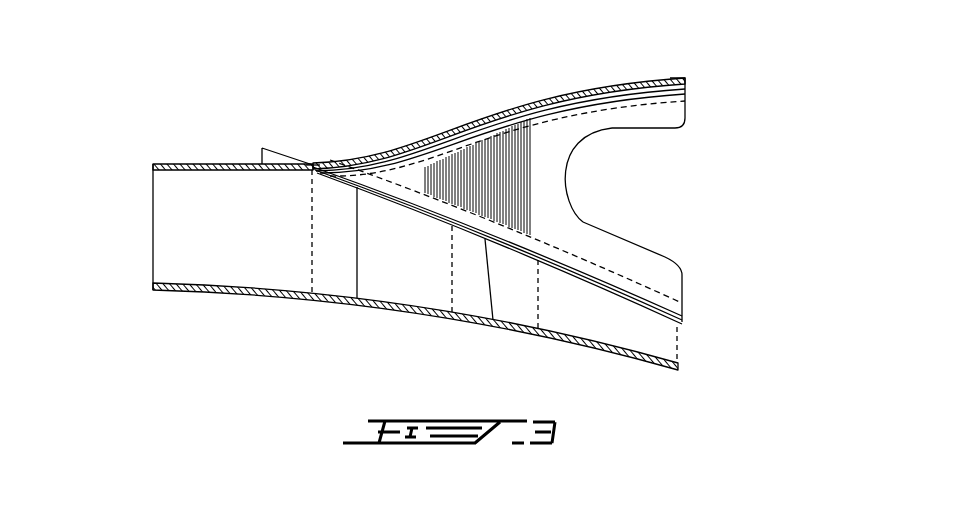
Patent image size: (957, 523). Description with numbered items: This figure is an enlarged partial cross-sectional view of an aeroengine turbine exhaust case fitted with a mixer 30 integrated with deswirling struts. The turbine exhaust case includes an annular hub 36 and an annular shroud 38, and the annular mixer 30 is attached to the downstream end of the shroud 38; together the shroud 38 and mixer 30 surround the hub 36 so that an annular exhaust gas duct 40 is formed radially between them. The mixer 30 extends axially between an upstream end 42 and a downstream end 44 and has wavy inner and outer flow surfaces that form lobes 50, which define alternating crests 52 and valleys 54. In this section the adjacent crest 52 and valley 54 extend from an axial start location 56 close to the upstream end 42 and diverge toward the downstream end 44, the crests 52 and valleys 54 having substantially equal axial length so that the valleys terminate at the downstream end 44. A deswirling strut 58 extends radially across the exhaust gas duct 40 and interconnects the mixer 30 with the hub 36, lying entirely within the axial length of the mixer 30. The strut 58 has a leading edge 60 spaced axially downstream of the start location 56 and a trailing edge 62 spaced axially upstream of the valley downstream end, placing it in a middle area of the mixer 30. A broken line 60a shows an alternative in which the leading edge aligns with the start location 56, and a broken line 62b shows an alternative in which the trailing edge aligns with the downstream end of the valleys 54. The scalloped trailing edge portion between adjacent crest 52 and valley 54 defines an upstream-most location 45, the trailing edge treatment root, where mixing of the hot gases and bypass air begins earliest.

The mixer 30 is at (545, 123).
The hub 36 is at (250, 291).
The shroud 38 is at (198, 163).
The exhaust gas duct 40 is at (520, 300).
The upstream end 42 is at (262, 148).
The downstream end 44 is at (683, 290).
The upstream-most location 45 is at (565, 180).
The lobes 50 is at (660, 110).
The crest 52 is at (650, 78).
The valley 54 is at (612, 297).
The start location 56 is at (313, 163).
The deswirling strut 58 is at (390, 278).
The leading edge 60 is at (357, 262).
The broken line 60a is at (312, 262).
The trailing edge 62 is at (488, 280).
The broken line 62b is at (680, 345).